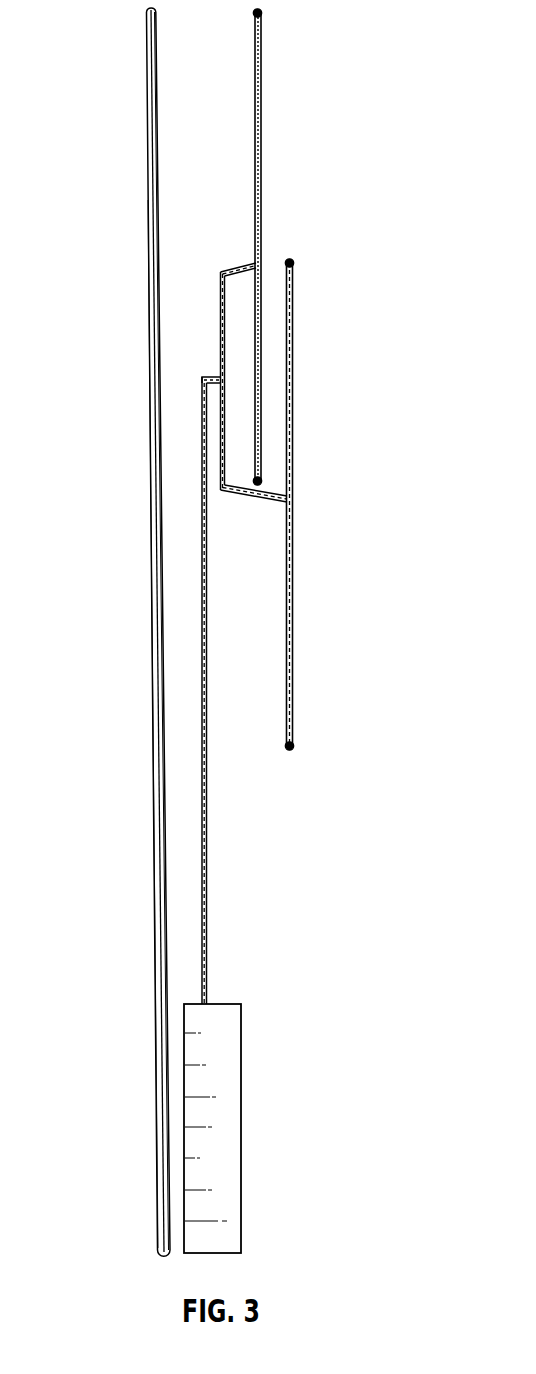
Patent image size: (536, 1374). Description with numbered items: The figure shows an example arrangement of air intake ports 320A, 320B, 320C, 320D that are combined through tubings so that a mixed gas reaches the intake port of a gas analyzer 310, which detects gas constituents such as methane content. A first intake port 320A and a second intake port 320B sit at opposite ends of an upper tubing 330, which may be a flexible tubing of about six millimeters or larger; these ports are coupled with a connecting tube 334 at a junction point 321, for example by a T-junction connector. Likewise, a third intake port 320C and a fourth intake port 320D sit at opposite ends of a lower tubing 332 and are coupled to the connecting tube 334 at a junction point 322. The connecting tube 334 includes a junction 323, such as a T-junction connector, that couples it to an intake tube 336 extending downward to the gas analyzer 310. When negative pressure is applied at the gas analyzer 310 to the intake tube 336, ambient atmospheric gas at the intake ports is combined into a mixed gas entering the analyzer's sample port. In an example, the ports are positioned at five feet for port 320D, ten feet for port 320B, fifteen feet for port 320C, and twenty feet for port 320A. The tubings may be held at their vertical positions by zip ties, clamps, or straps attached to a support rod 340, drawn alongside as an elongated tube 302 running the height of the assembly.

The tube 302 is at (153, 835).
The gas analyzer 310 is at (242, 1142).
The first intake port 320A is at (270, 14).
The second intake port 320B is at (274, 480).
The third intake port 320C is at (303, 264).
The fourth intake port 320D is at (304, 746).
The junction point 321 is at (262, 266).
The junction point 322 is at (293, 498).
The junction 323 is at (213, 374).
The upper tubing 330 is at (263, 137).
The lower tubing 332 is at (293, 590).
The connecting tube 334 is at (220, 292).
The intake tube 336 is at (202, 683).
The support rod 340 is at (157, 996).